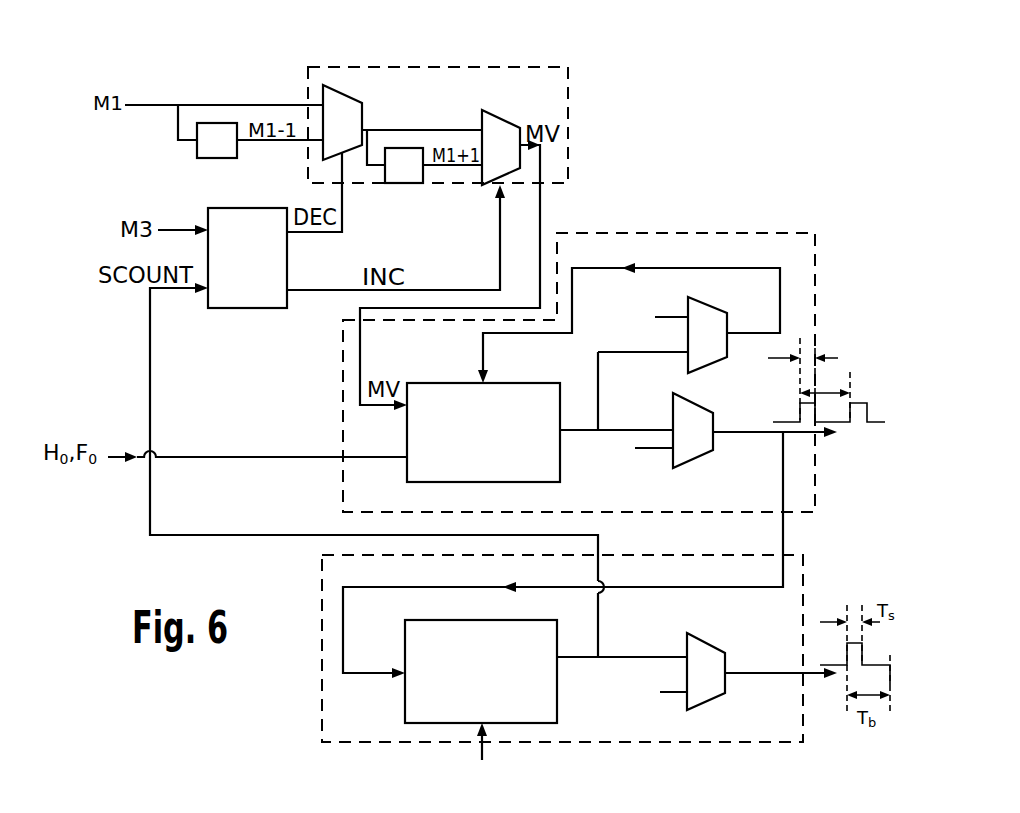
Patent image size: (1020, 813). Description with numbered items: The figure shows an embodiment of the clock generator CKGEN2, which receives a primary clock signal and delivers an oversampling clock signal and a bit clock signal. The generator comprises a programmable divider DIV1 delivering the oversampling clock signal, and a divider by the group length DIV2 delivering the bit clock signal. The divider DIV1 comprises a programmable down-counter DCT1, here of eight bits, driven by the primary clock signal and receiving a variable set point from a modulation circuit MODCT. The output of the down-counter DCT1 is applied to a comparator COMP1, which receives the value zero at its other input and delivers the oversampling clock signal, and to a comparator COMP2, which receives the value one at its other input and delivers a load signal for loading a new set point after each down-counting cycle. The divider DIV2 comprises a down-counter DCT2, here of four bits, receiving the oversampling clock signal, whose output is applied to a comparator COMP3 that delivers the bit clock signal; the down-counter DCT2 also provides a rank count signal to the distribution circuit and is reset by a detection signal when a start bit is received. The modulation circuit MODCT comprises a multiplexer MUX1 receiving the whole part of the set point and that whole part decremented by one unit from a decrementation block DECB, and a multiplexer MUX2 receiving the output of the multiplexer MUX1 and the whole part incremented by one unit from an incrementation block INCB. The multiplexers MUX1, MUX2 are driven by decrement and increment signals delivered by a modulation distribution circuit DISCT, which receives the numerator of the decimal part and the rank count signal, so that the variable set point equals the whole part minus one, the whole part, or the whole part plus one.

The modulation circuit MODCT is at (568, 98).
The multiplexer MUX1 is at (350, 85).
The multiplexer MUX2 is at (500, 108).
The decrementation block DECB is at (205, 158).
The incrementation block INCB is at (404, 183).
The modulation distribution circuit DISCT is at (282, 269).
The programmable divider DIV1 is at (343, 382).
The programmable down-counter DCT1 is at (513, 431).
The comparator COMP2 is at (710, 320).
The comparator COMP1 is at (690, 455).
The divider in 1/N DIV2 is at (320, 690).
The down-counter DCT2 is at (480, 667).
The comparator COMP3 is at (710, 693).
The clock generator CKGEN2 is at (664, 175).